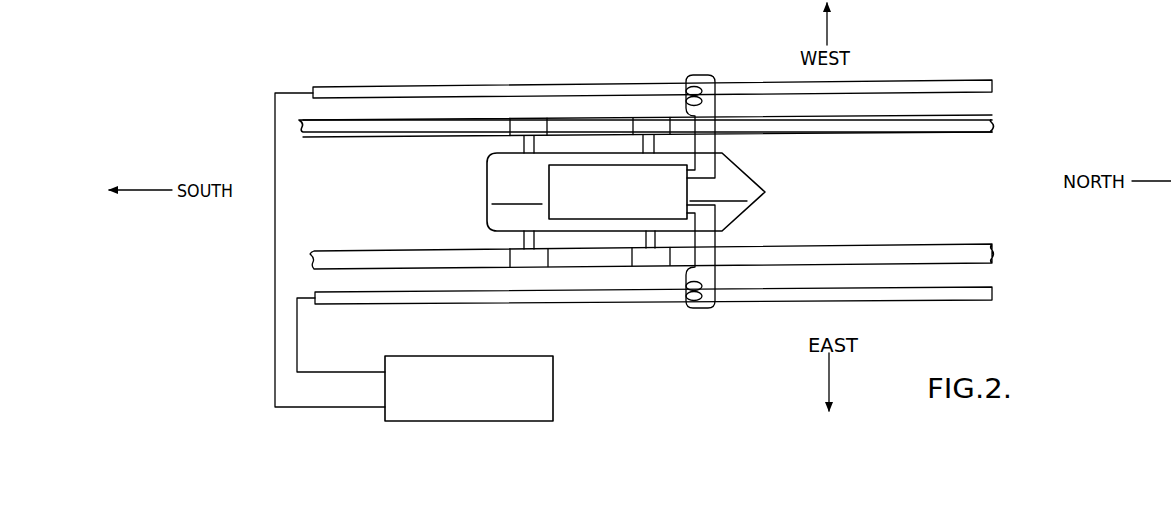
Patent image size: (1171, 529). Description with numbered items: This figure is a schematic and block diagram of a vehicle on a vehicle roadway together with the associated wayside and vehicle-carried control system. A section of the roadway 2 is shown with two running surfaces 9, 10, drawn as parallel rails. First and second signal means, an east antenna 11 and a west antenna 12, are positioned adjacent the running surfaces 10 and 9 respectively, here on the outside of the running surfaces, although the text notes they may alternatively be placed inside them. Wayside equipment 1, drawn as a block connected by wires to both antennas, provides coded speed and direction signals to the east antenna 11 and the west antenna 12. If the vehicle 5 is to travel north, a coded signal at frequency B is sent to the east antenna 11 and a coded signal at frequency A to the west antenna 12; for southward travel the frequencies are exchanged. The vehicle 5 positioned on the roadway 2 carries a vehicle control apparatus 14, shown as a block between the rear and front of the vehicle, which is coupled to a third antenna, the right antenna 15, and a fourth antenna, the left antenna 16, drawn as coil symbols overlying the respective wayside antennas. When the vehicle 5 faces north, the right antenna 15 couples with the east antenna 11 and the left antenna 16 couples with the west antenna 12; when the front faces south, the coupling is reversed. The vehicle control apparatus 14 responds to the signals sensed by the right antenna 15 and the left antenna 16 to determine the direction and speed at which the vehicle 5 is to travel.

The wayside equipment 1 is at (520, 421).
The roadway 2 is at (627, 190).
The vehicle 5 is at (487, 168).
The running surface 9 is at (932, 128).
The running surface 10 is at (936, 252).
The east antenna 11 is at (925, 297).
The west antenna 12 is at (915, 83).
The vehicle control apparatus 14 is at (551, 175).
The right antenna 15 is at (690, 306).
The left antenna 16 is at (686, 78).